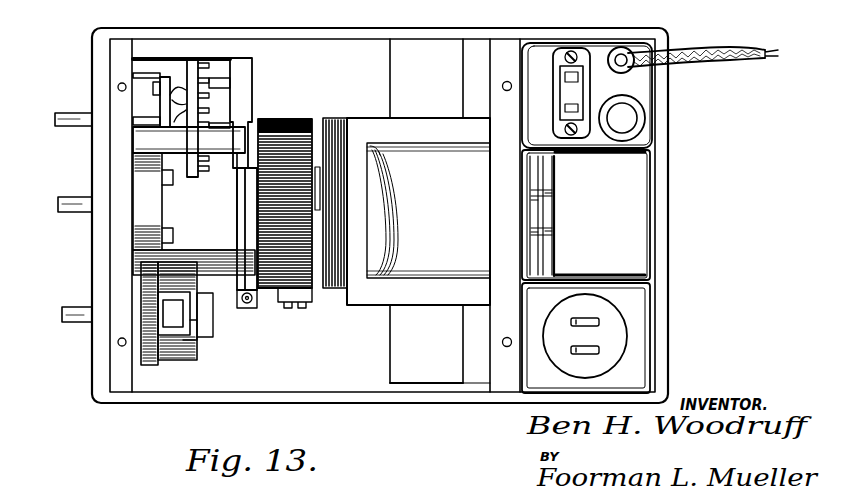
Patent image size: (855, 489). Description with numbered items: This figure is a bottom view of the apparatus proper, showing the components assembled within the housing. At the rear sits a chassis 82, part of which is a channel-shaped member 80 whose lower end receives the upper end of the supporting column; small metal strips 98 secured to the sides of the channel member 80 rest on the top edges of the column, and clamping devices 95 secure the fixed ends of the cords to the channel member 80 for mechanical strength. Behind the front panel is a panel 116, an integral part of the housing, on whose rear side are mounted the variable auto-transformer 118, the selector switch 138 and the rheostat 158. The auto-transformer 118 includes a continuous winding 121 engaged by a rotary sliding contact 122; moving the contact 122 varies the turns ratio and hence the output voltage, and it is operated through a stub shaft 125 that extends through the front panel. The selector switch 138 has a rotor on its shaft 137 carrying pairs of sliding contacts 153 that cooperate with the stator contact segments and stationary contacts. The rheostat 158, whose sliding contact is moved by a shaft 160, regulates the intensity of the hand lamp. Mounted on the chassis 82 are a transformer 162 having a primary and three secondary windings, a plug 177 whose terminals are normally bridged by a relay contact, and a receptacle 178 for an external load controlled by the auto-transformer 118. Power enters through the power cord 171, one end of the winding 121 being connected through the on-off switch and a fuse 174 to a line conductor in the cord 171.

The channel-shaped member 80 is at (653, 150).
The chassis 82 is at (434, 83).
The clamping devices 95 is at (556, 186).
The metal strips 98 is at (593, 156).
The panel 116 is at (122, 388).
The variable auto-transformer 118 is at (234, 292).
The continuous winding 121 is at (296, 118).
The rotary sliding contact 122 is at (302, 308).
The stub shaft 125 is at (70, 200).
The selector switch shaft 137 is at (66, 116).
The selector switch 138 is at (292, 70).
The sliding contacts 153 is at (182, 125).
The rheostat 158 is at (176, 366).
The rheostat shaft 160 is at (74, 322).
The transformer 162 is at (367, 117).
The power cord 171 is at (724, 64).
The fuse 174 is at (640, 118).
The plug 177 is at (627, 338).
The receptacle 178 is at (547, 66).